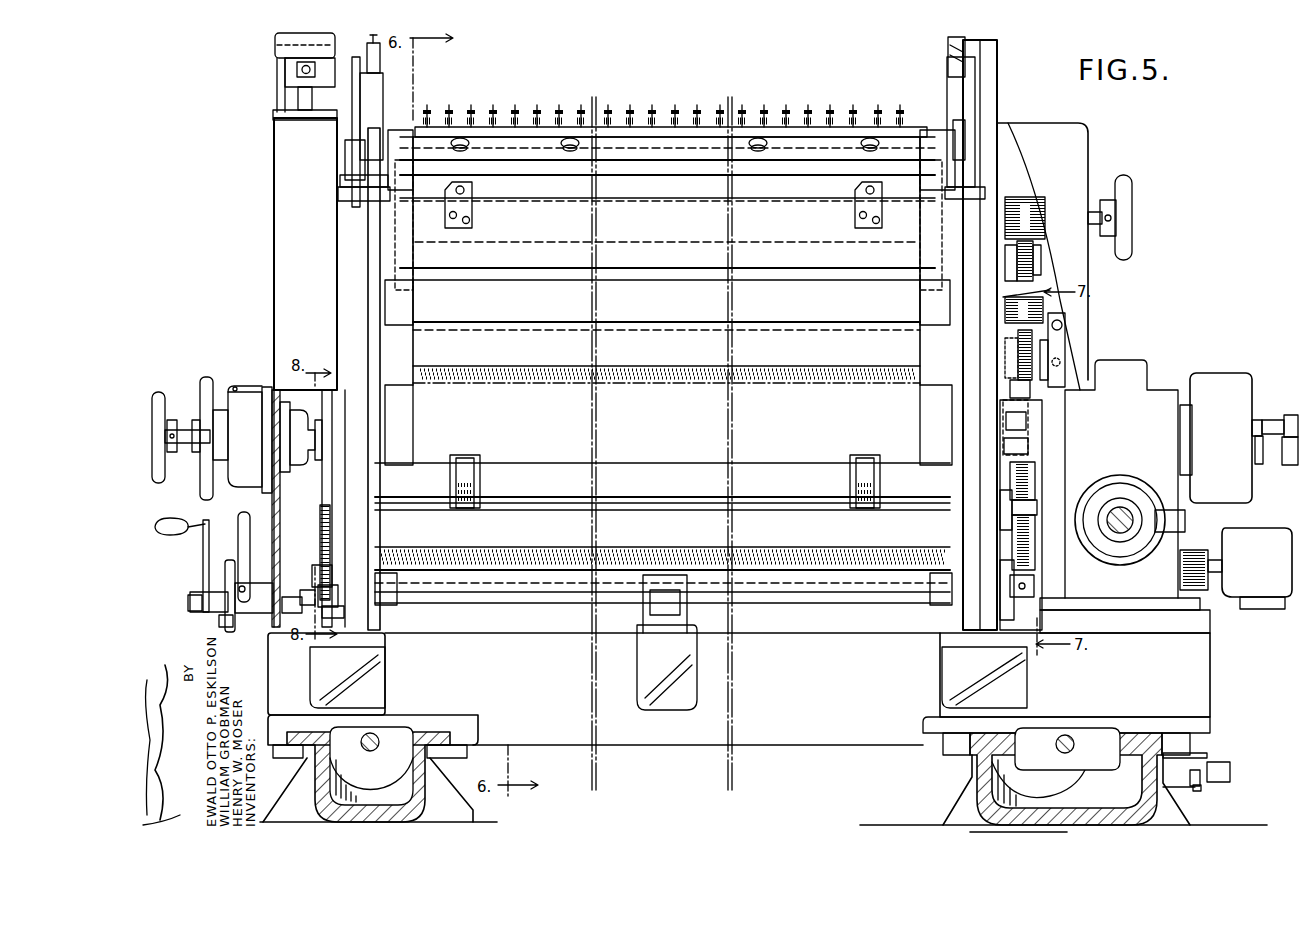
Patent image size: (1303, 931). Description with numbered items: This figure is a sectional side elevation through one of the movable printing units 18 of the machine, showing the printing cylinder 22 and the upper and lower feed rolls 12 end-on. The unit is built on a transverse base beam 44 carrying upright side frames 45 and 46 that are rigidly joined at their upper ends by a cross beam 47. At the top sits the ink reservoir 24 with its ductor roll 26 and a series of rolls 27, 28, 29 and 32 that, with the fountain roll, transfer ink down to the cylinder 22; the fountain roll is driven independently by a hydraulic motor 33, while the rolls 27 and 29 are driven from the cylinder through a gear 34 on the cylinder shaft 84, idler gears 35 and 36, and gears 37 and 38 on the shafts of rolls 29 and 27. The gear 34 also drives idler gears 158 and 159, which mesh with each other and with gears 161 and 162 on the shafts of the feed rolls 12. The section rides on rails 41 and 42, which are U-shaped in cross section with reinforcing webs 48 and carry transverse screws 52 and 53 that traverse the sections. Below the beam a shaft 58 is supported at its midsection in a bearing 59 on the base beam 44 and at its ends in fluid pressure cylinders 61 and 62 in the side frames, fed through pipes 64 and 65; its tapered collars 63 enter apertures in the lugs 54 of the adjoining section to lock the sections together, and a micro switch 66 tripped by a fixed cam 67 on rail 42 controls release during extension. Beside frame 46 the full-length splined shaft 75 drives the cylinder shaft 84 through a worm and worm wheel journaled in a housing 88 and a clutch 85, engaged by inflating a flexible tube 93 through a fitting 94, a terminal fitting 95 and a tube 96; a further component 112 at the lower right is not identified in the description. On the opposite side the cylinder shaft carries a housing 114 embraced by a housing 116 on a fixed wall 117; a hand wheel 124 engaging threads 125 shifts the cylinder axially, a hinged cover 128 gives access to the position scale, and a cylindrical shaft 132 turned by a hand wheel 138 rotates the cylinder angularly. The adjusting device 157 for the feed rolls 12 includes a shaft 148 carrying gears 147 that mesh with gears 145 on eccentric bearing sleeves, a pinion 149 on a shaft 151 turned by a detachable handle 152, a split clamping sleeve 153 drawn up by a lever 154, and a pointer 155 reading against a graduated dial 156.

The feed rolls 12 is at (772, 478).
The printing unit 18 is at (266, 209).
The printing cylinder 22 is at (670, 426).
The ink reservoir 24 is at (843, 128).
The ductor roll 26 is at (660, 126).
The roll 27 is at (792, 253).
The roll 28 is at (506, 280).
The roll 29 is at (679, 312).
The roll 32 is at (687, 356).
The hydraulic motor 33 is at (280, 57).
The gear 34 is at (1040, 388).
The idler gear 35 is at (1008, 342).
The idler gear 36 is at (1030, 260).
The gear 37 is at (1050, 310).
The gear 38 is at (1014, 196).
The rail 41 is at (328, 795).
The rail 42 is at (978, 787).
The transverse base beam 44 is at (654, 730).
The side frame 45 is at (338, 268).
The side frame 46 is at (975, 428).
The cross beam 47 is at (655, 236).
The transverse reinforcing webs 48 is at (370, 788).
The transverse screw 52 is at (376, 735).
The transverse screw 53 is at (1056, 748).
The lug 54 is at (390, 602).
The shaft 58 is at (578, 588).
The bearing 59 is at (648, 588).
The fluid pressure cylinder 61 is at (1003, 590).
The fluid pressure cylinder 62 is at (330, 592).
The collar 63 is at (380, 575).
The pipe 64 is at (1020, 606).
The pipe 65 is at (302, 598).
The micro switch 66 is at (1228, 773).
The fixed cam 67 is at (1200, 791).
The splined shaft 75 is at (1122, 505).
The cylinder shaft 84 is at (395, 430).
The clutch 85 is at (1225, 385).
The housing 88 is at (1158, 396).
The flexible tube 93 is at (1258, 420).
The fitting 94 is at (1282, 418).
The terminal fitting 95 is at (1262, 465).
The tube 96 is at (1290, 466).
The motor 112 is at (1277, 564).
The housing 114 is at (300, 432).
The housing 116 is at (256, 448).
The fixed wall 117 is at (271, 505).
The hand wheel 124 is at (208, 380).
The threads 125 is at (205, 455).
The hinged cover 128 is at (252, 390).
The cylindrical shaft 132 is at (180, 428).
The hand wheel 138 is at (158, 392).
The gear 145 is at (318, 520).
The idler gear 147 is at (315, 567).
The shaft 148 is at (850, 572).
The pinion 149 is at (330, 608).
The shaft 151 is at (290, 614).
The detachable handle 152 is at (195, 548).
The split sleeve 153 is at (198, 600).
The lever 154 is at (240, 528).
The pointer 155 is at (232, 572).
The graduated dial 156 is at (224, 627).
The adjusting device 157 is at (213, 607).
The idler gear 158 is at (1002, 505).
The idler gear 159 is at (1032, 506).
The gear 161 is at (1028, 478).
The gear 162 is at (1028, 540).